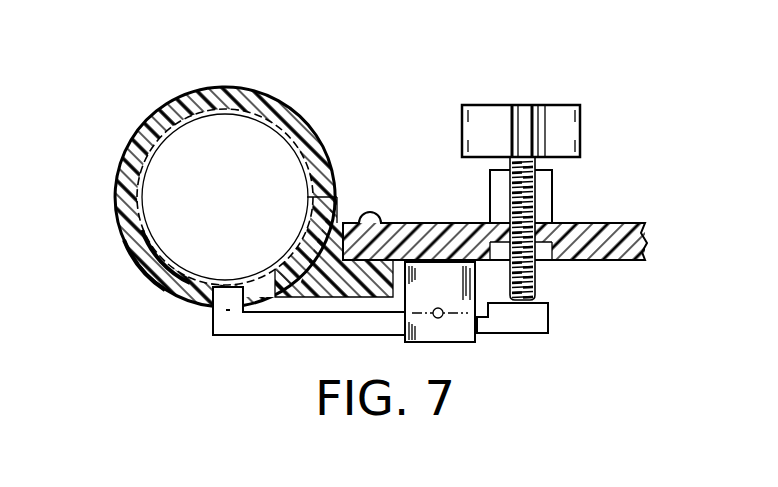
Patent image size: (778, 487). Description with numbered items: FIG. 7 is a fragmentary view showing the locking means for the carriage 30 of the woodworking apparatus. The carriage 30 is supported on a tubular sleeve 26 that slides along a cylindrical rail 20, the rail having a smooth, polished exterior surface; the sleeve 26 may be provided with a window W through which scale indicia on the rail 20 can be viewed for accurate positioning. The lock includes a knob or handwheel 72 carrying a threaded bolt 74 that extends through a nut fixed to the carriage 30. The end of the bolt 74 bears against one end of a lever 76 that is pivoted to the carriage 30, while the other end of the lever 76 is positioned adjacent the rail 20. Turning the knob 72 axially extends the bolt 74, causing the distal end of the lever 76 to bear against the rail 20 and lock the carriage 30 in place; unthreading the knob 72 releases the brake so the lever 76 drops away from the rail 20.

The rail 20 is at (175, 123).
The tubular sleeve 26 is at (163, 112).
The window W is at (308, 147).
The carriage 30 is at (606, 260).
The knob 72 is at (578, 128).
The threaded bolt 74 is at (535, 193).
The lever 76 is at (268, 322).